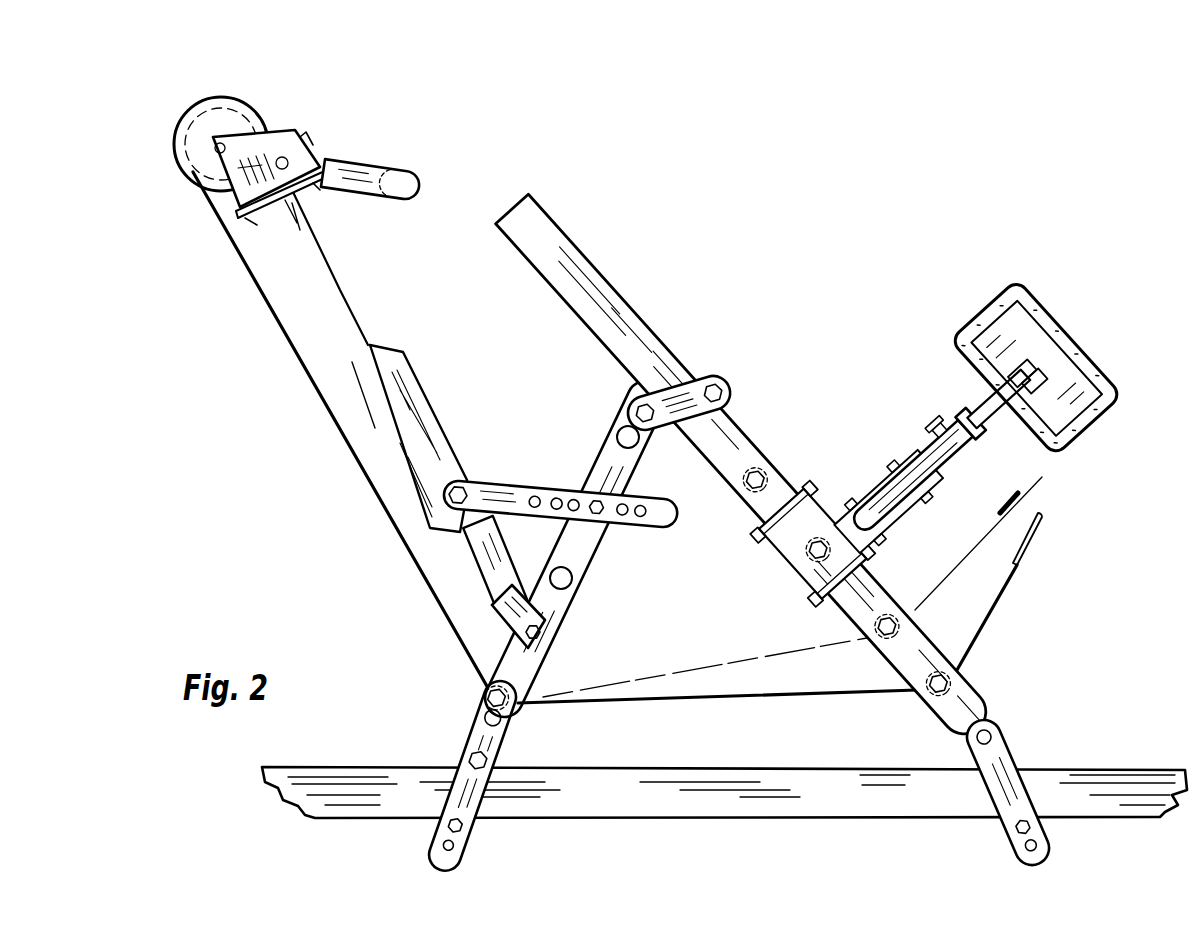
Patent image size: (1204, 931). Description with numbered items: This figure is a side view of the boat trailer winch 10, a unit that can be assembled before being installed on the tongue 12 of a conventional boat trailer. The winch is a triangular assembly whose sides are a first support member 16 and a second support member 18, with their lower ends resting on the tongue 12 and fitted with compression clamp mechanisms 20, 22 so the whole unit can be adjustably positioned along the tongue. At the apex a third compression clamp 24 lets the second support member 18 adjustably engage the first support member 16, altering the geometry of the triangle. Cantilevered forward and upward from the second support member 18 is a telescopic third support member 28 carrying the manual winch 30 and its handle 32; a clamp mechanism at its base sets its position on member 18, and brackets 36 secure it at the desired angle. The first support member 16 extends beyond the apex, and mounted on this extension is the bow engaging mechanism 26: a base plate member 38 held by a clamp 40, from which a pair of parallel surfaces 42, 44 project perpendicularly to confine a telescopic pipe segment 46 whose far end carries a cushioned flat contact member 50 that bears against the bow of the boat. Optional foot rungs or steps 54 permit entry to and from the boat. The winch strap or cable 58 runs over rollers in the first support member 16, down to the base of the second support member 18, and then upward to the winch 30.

The boat trailer winch 10 is at (892, 214).
The tongue 12 is at (1121, 781).
The first support member 16 is at (917, 647).
The second support member 18 is at (585, 546).
The compression clamp mechanism 20 is at (990, 753).
The compression clamp mechanism 22 is at (463, 782).
The third compression clamp 24 is at (693, 390).
The bow engaging mechanism 26 is at (920, 372).
The third support member 28 is at (368, 372).
The manual winch 30 is at (208, 170).
The handle 32 is at (383, 170).
The brackets 36 is at (503, 497).
The base plate member 38 is at (870, 558).
The clamp 40 is at (817, 587).
The parallel surface 42 is at (887, 480).
The parallel surface 44 is at (900, 520).
The telescopic concentric pipe segment 46 is at (925, 455).
The cushioned flat contact member 50 is at (1073, 403).
The foot rungs or steps 54 is at (630, 437).
The winch strap or cable 58 is at (427, 590).